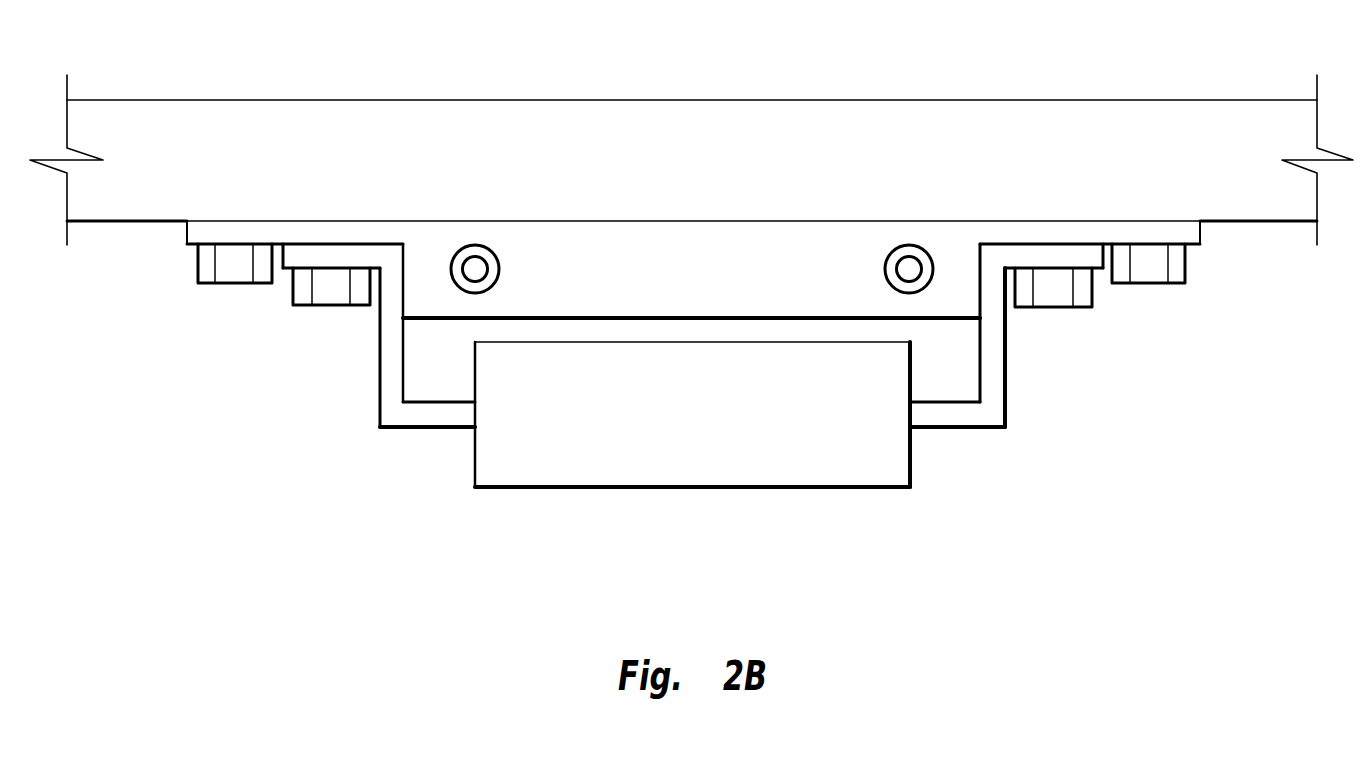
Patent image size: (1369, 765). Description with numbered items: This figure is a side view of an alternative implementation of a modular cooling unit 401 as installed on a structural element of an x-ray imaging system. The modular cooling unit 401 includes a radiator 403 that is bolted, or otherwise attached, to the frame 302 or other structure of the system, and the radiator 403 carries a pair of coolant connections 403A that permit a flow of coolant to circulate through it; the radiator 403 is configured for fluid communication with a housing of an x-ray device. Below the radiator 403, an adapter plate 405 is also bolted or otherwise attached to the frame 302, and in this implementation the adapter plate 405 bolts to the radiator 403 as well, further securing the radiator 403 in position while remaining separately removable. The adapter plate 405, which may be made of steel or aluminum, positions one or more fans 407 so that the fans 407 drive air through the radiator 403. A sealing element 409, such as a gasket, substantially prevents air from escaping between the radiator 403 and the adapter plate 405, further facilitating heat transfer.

The frame 302 is at (693, 162).
The modular cooling unit 401 is at (330, 443).
The radiator 403 is at (427, 292).
The coolant connections 403A is at (475, 245).
The adapter plate 405 is at (433, 415).
The fans 407 is at (693, 490).
The sealing element 409 is at (945, 377).